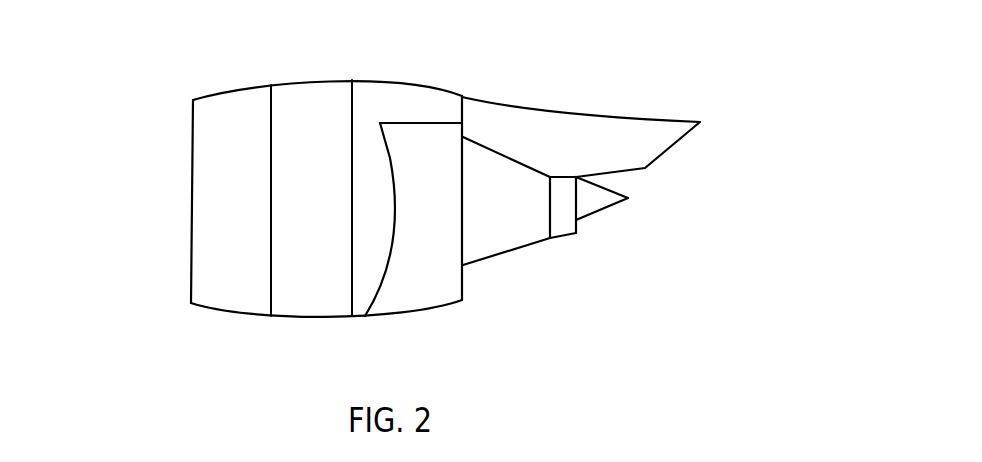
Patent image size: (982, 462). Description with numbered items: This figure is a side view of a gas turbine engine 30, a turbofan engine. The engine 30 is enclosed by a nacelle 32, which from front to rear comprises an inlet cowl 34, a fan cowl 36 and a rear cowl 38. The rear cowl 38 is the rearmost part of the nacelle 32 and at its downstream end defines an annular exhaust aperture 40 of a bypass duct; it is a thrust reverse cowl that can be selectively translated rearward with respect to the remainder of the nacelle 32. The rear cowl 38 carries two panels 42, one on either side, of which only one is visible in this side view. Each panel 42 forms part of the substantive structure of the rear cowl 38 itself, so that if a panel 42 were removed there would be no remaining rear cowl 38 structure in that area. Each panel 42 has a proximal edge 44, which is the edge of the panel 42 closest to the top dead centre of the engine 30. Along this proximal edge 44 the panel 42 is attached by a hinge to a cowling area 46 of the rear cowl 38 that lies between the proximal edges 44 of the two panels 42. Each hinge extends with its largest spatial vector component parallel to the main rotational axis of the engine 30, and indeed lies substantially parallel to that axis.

The gas turbine engine 30 is at (144, 101).
The nacelle 32 is at (392, 98).
The inlet cowl 34 is at (231, 105).
The fan cowl 36 is at (307, 96).
The rear cowl 38 is at (372, 97).
The annular exhaust aperture 40 is at (463, 280).
The panel 42 is at (418, 292).
The proximal edge 44 is at (445, 123).
The cowling area 46 is at (433, 102).